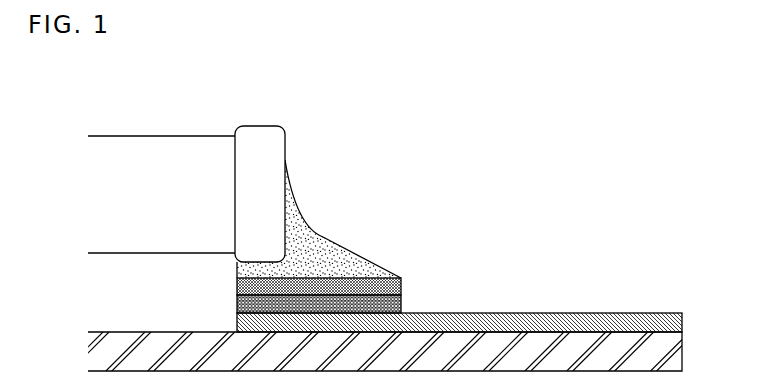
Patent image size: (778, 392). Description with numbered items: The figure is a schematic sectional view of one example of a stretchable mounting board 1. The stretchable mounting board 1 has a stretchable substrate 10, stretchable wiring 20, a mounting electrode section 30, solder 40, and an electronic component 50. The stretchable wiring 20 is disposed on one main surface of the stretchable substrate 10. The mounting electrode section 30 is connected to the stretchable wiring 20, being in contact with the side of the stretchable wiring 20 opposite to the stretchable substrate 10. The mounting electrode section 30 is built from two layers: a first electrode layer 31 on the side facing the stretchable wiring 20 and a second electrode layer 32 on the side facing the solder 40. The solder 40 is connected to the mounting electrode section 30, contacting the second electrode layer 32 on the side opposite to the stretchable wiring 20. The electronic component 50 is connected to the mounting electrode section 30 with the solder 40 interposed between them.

The stretchable mounting board 1 is at (533, 132).
The stretchable substrate 10 is at (672, 350).
The stretchable wiring 20 is at (672, 322).
The mounting electrode section 30 is at (379, 277).
The first electrode layer 31 is at (402, 303).
The second electrode layer 32 is at (402, 282).
The solder 40 is at (342, 248).
The electronic component 50 is at (137, 150).